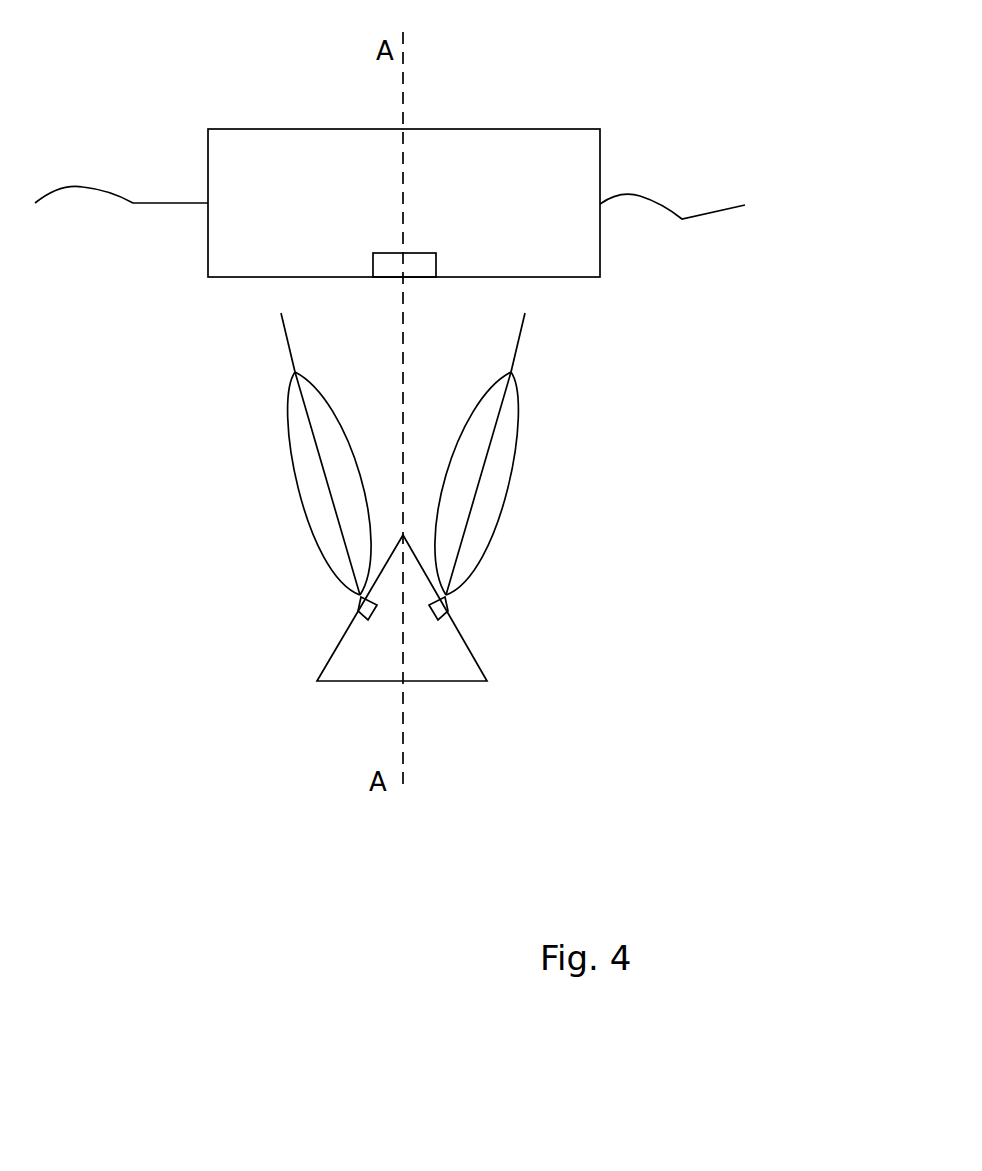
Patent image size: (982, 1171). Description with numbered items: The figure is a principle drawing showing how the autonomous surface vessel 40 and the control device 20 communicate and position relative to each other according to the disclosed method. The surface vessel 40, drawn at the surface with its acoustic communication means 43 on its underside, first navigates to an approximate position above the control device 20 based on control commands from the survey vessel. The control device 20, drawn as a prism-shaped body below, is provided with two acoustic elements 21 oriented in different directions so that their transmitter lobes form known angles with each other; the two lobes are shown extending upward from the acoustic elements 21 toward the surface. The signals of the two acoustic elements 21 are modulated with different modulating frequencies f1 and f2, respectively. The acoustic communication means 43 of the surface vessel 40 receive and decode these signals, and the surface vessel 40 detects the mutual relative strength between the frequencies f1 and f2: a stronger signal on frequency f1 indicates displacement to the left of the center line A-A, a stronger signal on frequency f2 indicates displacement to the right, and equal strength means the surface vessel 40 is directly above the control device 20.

The autonomous surface vessel 40 is at (522, 129).
The acoustic communication means 43 is at (413, 273).
The control device 20 is at (470, 644).
The acoustic element 21 is at (362, 610).
The modulating frequency f1 is at (326, 454).
The modulating frequency f2 is at (480, 454).